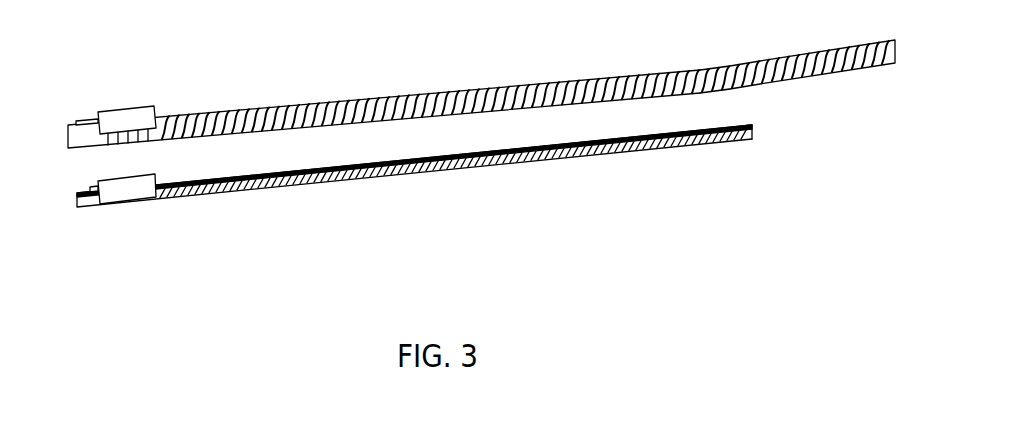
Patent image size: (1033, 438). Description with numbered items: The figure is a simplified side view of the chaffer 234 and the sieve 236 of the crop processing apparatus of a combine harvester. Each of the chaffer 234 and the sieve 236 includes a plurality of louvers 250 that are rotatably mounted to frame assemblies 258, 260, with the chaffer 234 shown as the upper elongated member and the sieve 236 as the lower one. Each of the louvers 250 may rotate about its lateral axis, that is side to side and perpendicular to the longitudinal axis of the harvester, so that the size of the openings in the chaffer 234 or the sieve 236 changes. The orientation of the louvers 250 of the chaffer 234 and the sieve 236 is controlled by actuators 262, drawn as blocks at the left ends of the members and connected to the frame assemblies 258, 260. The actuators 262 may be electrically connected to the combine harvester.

The chaffer 234 is at (547, 84).
The sieve 236 is at (303, 184).
The louvers 250 is at (632, 80).
The frame assembly 258 is at (713, 70).
The frame assembly 260 is at (750, 140).
The actuators 262 is at (135, 108).